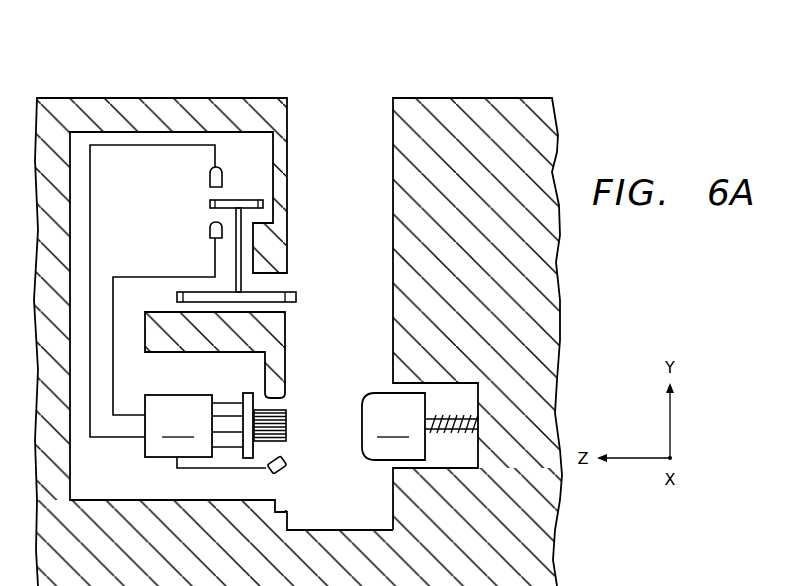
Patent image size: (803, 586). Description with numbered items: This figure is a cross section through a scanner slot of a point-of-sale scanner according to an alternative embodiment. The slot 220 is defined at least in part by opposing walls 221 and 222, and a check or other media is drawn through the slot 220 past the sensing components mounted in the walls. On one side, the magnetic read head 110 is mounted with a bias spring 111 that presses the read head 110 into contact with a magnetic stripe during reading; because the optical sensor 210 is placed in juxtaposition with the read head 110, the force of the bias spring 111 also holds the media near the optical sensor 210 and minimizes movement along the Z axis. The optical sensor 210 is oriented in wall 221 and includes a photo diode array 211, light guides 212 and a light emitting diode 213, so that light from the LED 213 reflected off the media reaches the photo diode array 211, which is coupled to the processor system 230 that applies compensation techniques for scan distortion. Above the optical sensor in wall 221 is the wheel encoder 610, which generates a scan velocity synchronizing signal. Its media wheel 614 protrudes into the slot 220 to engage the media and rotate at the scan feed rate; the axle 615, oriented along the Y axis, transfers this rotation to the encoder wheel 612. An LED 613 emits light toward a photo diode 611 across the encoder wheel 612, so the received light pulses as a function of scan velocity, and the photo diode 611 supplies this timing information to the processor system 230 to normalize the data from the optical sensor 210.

The magnetic read head 110 is at (393, 426).
The bias spring 111 is at (452, 412).
The optical sensor 210 is at (247, 431).
The photo diode array 211 is at (243, 395).
The light guides 212 is at (287, 430).
The light emitting diode (LED) 213 is at (288, 472).
The slot 220 is at (337, 60).
The wall 221 is at (292, 106).
The wall 222 is at (384, 106).
The processor system 230 is at (205, 431).
The wheel encoder 610 is at (228, 291).
The photo diode 611 is at (210, 176).
The encoder wheel 612 is at (238, 200).
The LED 613 is at (214, 233).
The media wheel 614 is at (298, 299).
The axle 615 is at (238, 282).